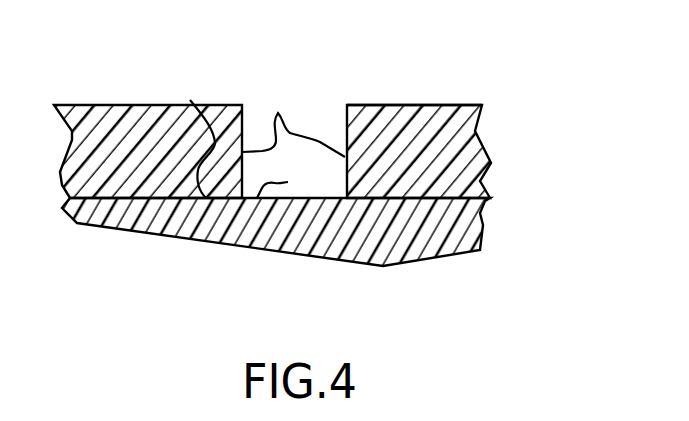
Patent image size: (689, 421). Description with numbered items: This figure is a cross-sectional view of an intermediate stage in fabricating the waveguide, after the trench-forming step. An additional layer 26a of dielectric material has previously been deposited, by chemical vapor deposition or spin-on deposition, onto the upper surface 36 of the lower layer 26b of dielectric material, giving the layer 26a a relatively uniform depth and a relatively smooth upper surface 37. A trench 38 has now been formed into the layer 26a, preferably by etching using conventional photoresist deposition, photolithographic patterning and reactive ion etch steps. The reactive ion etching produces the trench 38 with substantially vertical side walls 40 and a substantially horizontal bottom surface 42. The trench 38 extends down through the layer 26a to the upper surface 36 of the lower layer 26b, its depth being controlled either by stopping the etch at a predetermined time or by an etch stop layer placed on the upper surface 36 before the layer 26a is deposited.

The additional layer of dielectric material 26a is at (455, 134).
The lower layer of dielectric material 26b is at (465, 228).
The upper surface of the lower layer 36 is at (190, 100).
The upper surface of the additional layer 37 is at (473, 105).
The trench 38 is at (328, 90).
The side walls 40 is at (293, 117).
The bottom surface 42 is at (289, 181).